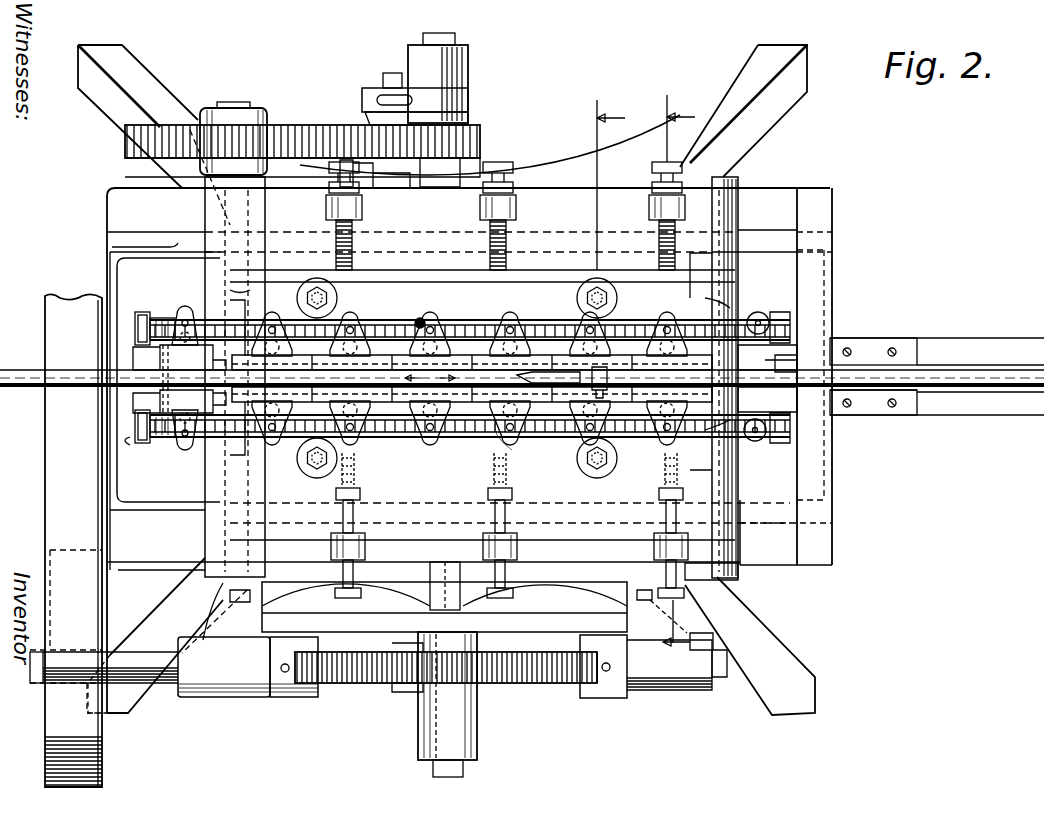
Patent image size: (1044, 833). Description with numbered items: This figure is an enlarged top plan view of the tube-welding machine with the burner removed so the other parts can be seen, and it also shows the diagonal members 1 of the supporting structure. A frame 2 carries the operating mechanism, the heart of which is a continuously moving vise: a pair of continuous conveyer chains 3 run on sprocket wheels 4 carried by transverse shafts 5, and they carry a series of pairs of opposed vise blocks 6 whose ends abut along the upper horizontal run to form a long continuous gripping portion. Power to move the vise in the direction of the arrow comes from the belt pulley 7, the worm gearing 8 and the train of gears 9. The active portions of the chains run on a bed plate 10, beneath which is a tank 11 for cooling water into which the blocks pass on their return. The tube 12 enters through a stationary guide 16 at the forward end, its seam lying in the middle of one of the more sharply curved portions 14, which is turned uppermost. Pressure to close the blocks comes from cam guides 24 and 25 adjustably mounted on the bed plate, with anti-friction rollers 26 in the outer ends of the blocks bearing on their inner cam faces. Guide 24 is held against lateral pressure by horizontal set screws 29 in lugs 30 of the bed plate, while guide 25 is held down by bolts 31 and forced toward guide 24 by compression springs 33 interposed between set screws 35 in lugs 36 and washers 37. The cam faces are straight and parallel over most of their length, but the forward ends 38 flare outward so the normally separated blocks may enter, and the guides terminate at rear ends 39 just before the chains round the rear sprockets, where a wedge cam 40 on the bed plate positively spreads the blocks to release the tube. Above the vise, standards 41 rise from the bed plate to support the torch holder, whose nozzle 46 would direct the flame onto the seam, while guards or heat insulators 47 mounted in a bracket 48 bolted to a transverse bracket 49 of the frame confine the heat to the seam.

The diagonal frame bars 1 is at (170, 110).
The frame 2 is at (835, 532).
The conveyer chain 3 is at (372, 318).
The sprocket wheel 4 is at (666, 380).
The transverse shaft 5 is at (596, 592).
The vise blocks 6 is at (135, 350).
The carriage blocks 7 is at (472, 376).
The worm gearing 8 is at (470, 684).
The train of gears 9 is at (298, 130).
The bed plate 10 is at (107, 246).
The tank 11 is at (118, 268).
The tube 12 is at (962, 362).
The more sharply curved portion 14 is at (130, 440).
The stationary guide 16 is at (875, 350).
The cam bar or guide 24 is at (650, 440).
The cam bar or guide 25 is at (632, 318).
The anti-friction rollers 26 is at (178, 315).
The horizontal set screws 29 is at (353, 246).
The lugs 30 is at (362, 212).
The bolts 31 is at (338, 463).
The compression springs 33 is at (361, 495).
The set screws 35 is at (354, 517).
The lugs 36 is at (366, 545).
The washers 37 is at (335, 503).
The forward ends 38 is at (715, 298).
The rear ends 39 is at (240, 276).
The wedge cam 40 is at (298, 298).
The standards 41 is at (163, 443).
The nozzle 46 is at (510, 420).
The guards or heat insulators 47 is at (560, 368).
The bracket 48 is at (735, 380).
The transverse bracket 49 is at (815, 474).